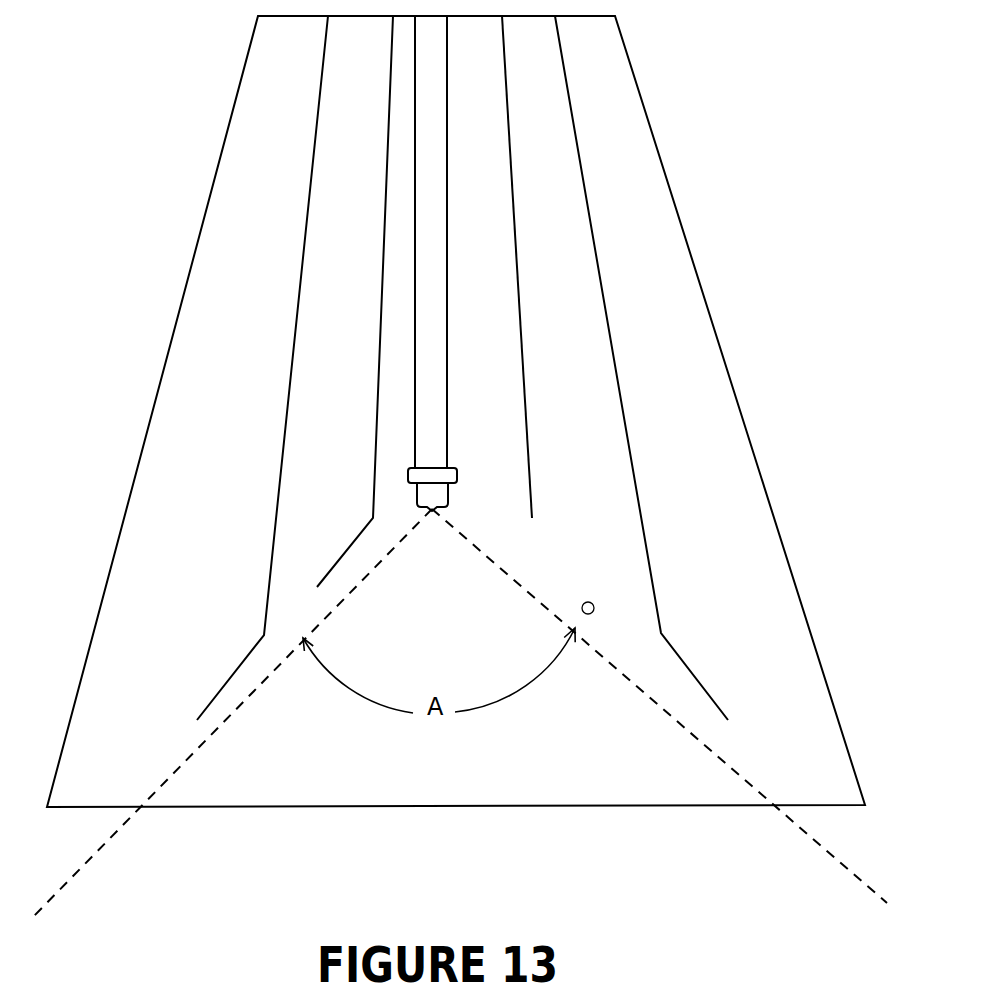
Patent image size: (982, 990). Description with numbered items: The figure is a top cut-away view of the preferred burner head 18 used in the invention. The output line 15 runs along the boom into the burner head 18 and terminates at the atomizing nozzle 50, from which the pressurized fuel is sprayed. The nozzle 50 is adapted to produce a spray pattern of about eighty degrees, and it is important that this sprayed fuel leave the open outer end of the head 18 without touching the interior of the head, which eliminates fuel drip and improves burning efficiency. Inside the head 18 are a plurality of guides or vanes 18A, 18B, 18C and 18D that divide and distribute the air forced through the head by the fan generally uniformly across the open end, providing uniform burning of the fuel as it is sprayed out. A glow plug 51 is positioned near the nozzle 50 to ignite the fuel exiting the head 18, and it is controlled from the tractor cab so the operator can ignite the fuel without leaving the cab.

The output line 15 is at (445, 288).
The burner head 18 is at (760, 470).
The guide or vane 18A is at (283, 433).
The guide or vane 18B is at (382, 310).
The guide or vane 18C is at (520, 323).
The guide or vane 18D is at (615, 365).
The atomizing nozzle 50 is at (449, 493).
The glow plug 51 is at (590, 602).